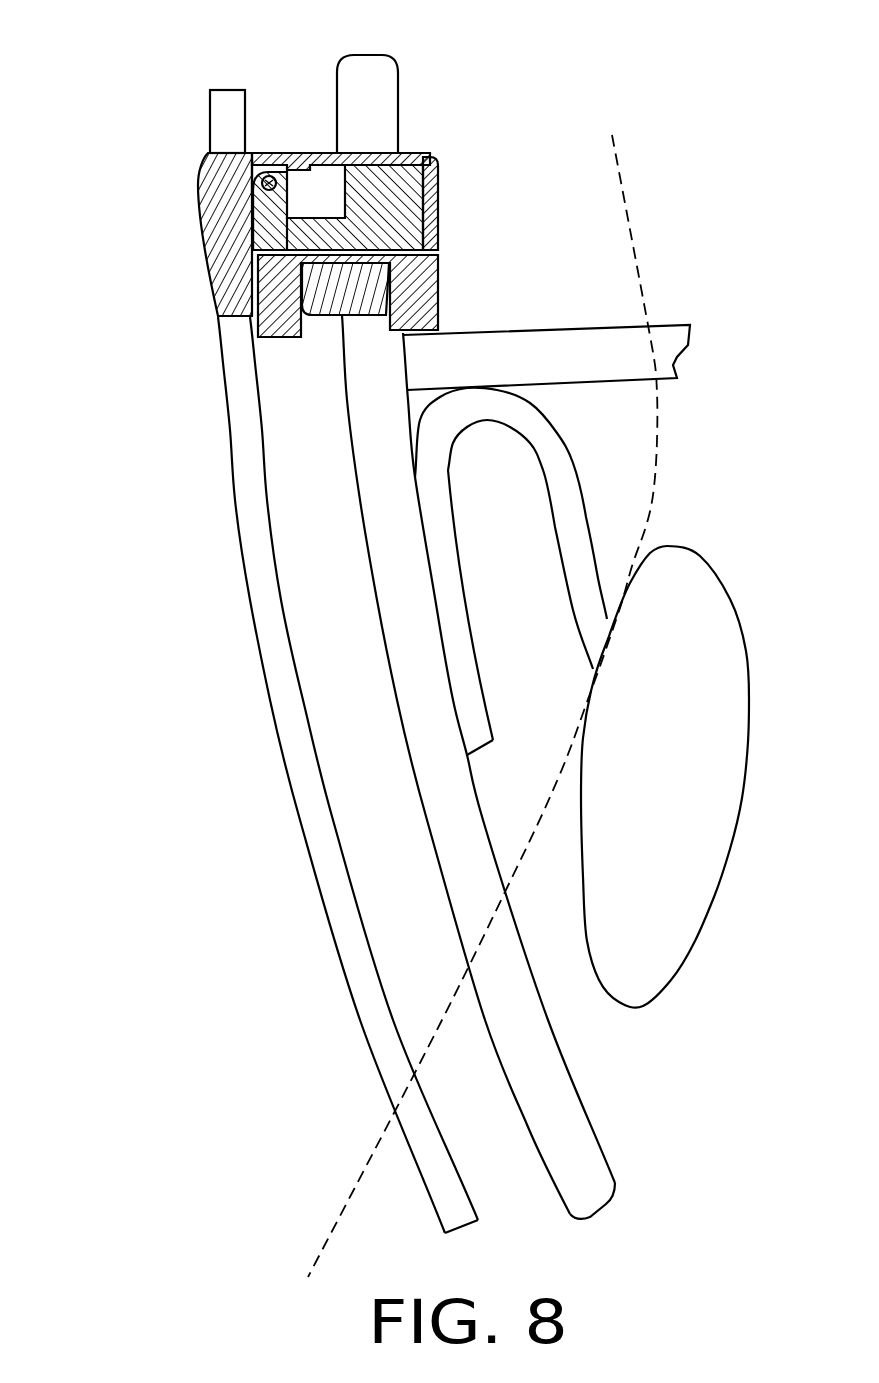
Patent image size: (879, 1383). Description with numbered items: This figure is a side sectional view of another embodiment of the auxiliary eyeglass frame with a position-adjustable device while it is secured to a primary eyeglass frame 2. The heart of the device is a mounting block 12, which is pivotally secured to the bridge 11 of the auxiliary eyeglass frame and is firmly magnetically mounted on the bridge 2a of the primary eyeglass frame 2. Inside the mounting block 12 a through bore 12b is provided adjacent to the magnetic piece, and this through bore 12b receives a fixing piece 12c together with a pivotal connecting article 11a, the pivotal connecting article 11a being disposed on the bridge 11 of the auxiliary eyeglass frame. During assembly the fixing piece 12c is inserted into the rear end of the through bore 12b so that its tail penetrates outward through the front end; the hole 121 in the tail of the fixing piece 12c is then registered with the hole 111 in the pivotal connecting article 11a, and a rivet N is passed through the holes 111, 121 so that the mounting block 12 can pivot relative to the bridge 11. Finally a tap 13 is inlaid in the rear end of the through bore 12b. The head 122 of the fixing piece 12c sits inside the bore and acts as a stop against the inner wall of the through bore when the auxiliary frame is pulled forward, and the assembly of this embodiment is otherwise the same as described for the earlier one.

The primary eyeglass frame 2 is at (568, 1122).
The bridge of primary eyeglass frame 2a is at (323, 315).
The bridge of auxiliary eyeglass frame 11 is at (218, 295).
The pivotal connecting article 11a is at (258, 157).
The hole 111 is at (253, 187).
The rivet N is at (262, 188).
The mounting block 12 is at (273, 160).
The through bore 12b is at (330, 175).
The fixing piece 12c is at (365, 173).
The hole 121 is at (257, 232).
The head 122 is at (440, 285).
The tap 13 is at (440, 207).